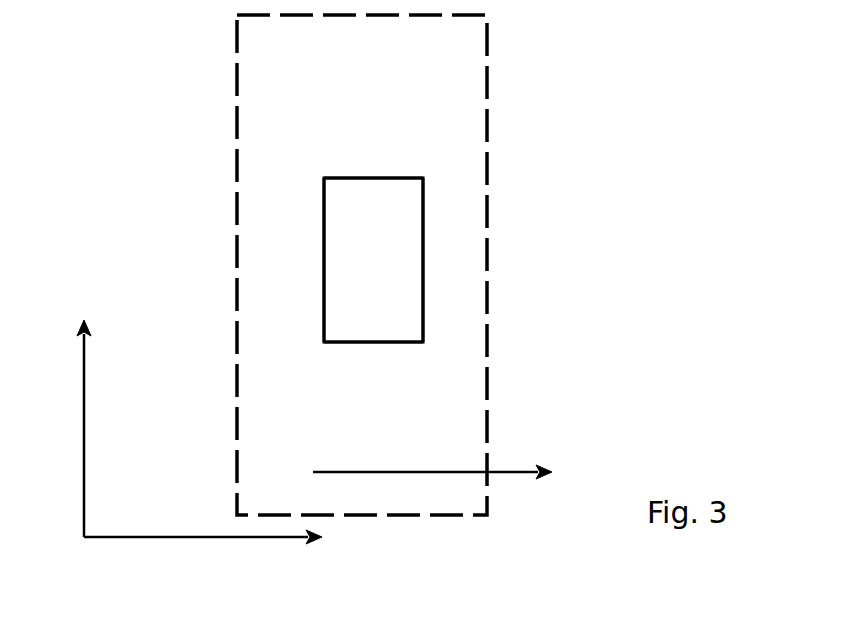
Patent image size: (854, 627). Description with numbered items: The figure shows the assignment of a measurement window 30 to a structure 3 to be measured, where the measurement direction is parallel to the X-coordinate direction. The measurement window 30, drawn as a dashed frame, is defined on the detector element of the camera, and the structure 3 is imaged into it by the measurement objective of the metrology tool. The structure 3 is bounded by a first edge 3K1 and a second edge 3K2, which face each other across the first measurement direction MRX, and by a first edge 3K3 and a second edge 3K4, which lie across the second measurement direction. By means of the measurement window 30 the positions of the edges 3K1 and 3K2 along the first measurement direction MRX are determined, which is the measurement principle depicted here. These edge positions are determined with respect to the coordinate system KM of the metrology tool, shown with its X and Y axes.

The measurement window 30 is at (237, 163).
The structure 3 is at (376, 282).
The first edge 3K1 is at (324, 222).
The second edge 3K2 is at (423, 313).
The first edge 3K3 is at (345, 342).
The second edge 3K4 is at (383, 178).
The coordinate system KM is at (84, 440).
The first measurement direction MRX is at (513, 471).